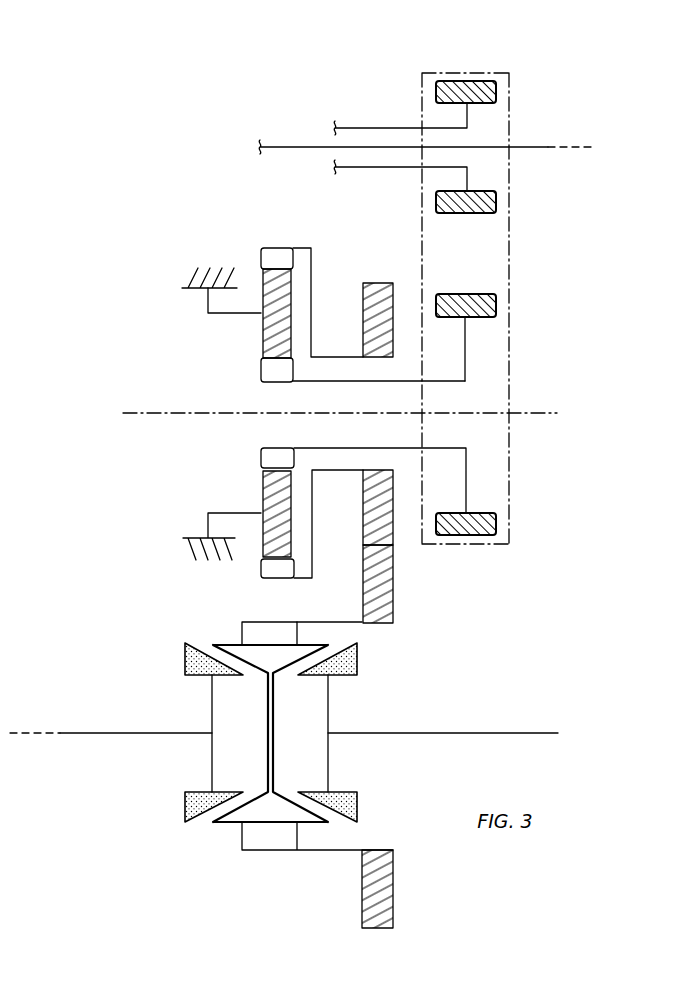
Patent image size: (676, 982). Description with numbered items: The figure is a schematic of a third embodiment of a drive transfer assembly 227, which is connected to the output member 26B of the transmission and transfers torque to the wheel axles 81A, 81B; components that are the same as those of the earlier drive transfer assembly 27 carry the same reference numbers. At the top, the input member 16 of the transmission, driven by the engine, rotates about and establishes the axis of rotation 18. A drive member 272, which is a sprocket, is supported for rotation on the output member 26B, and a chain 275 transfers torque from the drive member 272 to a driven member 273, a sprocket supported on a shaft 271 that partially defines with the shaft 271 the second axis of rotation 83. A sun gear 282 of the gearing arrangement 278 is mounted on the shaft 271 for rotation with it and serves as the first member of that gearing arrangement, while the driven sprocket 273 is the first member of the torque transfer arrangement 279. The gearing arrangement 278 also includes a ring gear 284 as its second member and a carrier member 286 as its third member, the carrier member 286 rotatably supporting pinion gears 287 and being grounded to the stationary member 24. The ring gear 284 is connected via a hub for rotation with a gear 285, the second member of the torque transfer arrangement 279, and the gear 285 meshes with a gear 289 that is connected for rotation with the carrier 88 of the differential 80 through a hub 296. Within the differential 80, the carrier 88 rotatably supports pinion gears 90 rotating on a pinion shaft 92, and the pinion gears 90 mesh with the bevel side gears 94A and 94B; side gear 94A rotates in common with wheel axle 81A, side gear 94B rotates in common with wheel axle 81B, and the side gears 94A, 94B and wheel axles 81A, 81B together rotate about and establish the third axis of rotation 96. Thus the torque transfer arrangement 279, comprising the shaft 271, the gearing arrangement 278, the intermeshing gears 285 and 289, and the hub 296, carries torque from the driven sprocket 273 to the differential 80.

The input member 16 is at (530, 147).
The axis of rotation 18 is at (565, 147).
The stationary member 24 is at (195, 280).
The output member 26B is at (375, 128).
The drive transfer assembly 27 is at (9, 305).
The differential 80 is at (130, 665).
The wheel axle 81A is at (97, 733).
The wheel axle 81B is at (468, 733).
The second axis of rotation 83 is at (140, 413).
The carrier 88 is at (242, 635).
The pinion gears 90 is at (230, 823).
The pinion shaft 92 is at (272, 708).
The side gear 94A is at (185, 800).
The side gear 94B is at (340, 790).
The third axis of rotation 96 is at (20, 733).
The drive transfer assembly 227 is at (545, 342).
The shaft 271 is at (407, 381).
The drive member 272 is at (496, 92).
The driven member 273 is at (496, 305).
The chain 275 is at (509, 467).
The gearing arrangement 278 is at (248, 567).
The torque transfer arrangement 279 is at (565, 292).
The sun gear 282 is at (261, 370).
The ring gear 284 is at (278, 248).
The gear 285 is at (363, 320).
The carrier member 286 is at (233, 313).
The pinion gears 287 is at (259, 304).
The gear 289 is at (393, 580).
The hub 296 is at (331, 622).